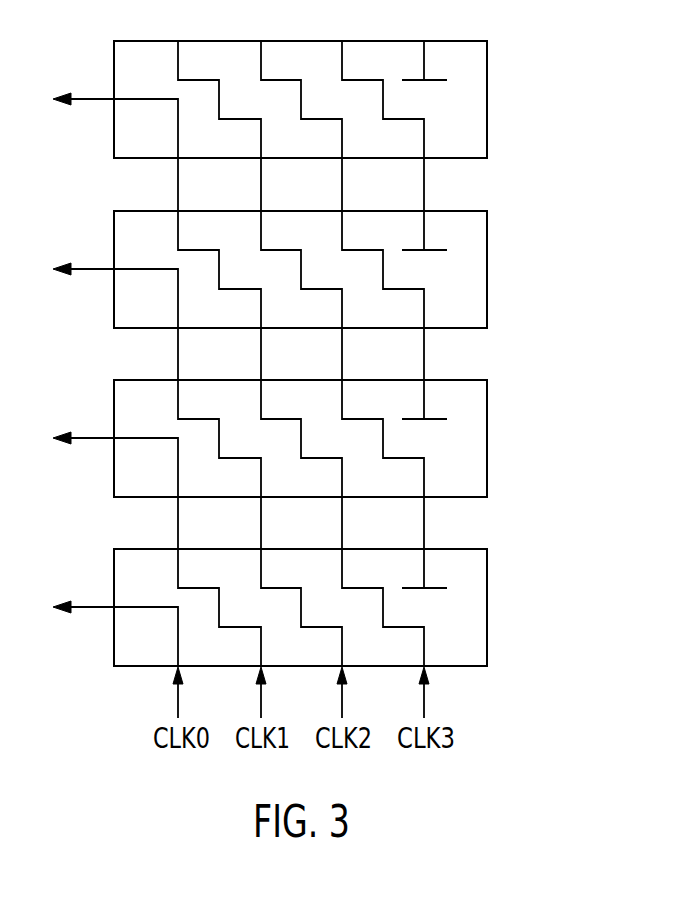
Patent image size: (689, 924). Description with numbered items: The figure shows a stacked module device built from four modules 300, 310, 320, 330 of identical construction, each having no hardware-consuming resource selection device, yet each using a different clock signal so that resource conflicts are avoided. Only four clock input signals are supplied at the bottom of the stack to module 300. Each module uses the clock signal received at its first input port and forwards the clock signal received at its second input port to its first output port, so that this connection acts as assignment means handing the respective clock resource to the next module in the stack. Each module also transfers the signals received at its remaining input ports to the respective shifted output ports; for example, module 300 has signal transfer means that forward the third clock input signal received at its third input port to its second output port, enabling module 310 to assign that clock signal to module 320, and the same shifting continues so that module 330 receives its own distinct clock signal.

The module 300 is at (489, 590).
The module 310 is at (489, 421).
The module 320 is at (489, 252).
The module 330 is at (489, 82).